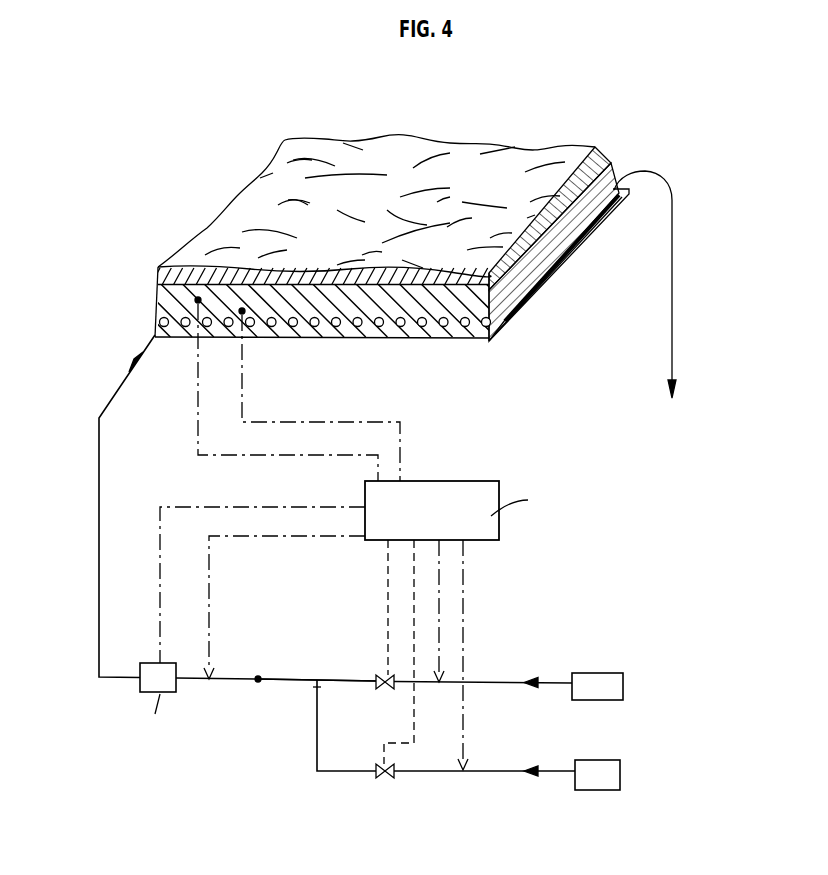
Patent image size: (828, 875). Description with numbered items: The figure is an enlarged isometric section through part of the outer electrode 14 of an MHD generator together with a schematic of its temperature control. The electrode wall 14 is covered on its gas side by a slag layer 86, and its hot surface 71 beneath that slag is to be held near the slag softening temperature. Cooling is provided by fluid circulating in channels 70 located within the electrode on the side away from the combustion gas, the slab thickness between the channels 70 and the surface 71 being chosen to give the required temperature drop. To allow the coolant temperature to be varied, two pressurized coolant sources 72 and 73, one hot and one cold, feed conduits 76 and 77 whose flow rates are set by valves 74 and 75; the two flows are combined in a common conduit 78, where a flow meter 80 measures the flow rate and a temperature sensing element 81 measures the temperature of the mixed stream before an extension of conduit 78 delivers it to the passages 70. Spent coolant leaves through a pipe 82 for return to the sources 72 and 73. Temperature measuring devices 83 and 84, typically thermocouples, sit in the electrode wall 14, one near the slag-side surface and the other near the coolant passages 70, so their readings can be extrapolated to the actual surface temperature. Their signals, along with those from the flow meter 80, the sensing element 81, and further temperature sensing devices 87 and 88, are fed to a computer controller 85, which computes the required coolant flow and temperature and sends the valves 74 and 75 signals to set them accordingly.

The outer electrode 14 is at (172, 300).
The cooling channels 70 is at (163, 322).
The electrode hot surface 71 is at (178, 285).
The pressurized coolant source 72 is at (605, 684).
The pressurized coolant source 73 is at (596, 773).
The control valve 74 is at (380, 677).
The control valve 75 is at (381, 775).
The conduit 76 is at (350, 683).
The conduit 77 is at (338, 772).
The common conduit 78 is at (98, 448).
The flow meter 80 is at (147, 675).
The temperature sensing element 81 is at (210, 679).
The pipe 82 is at (672, 333).
The temperature measuring device 83 is at (198, 304).
The temperature measuring device 84 is at (242, 315).
The computer controller 85 is at (426, 498).
The slag layer 86 is at (220, 238).
The temperature sensing device 87 is at (438, 684).
The temperature sensing device 88 is at (463, 771).